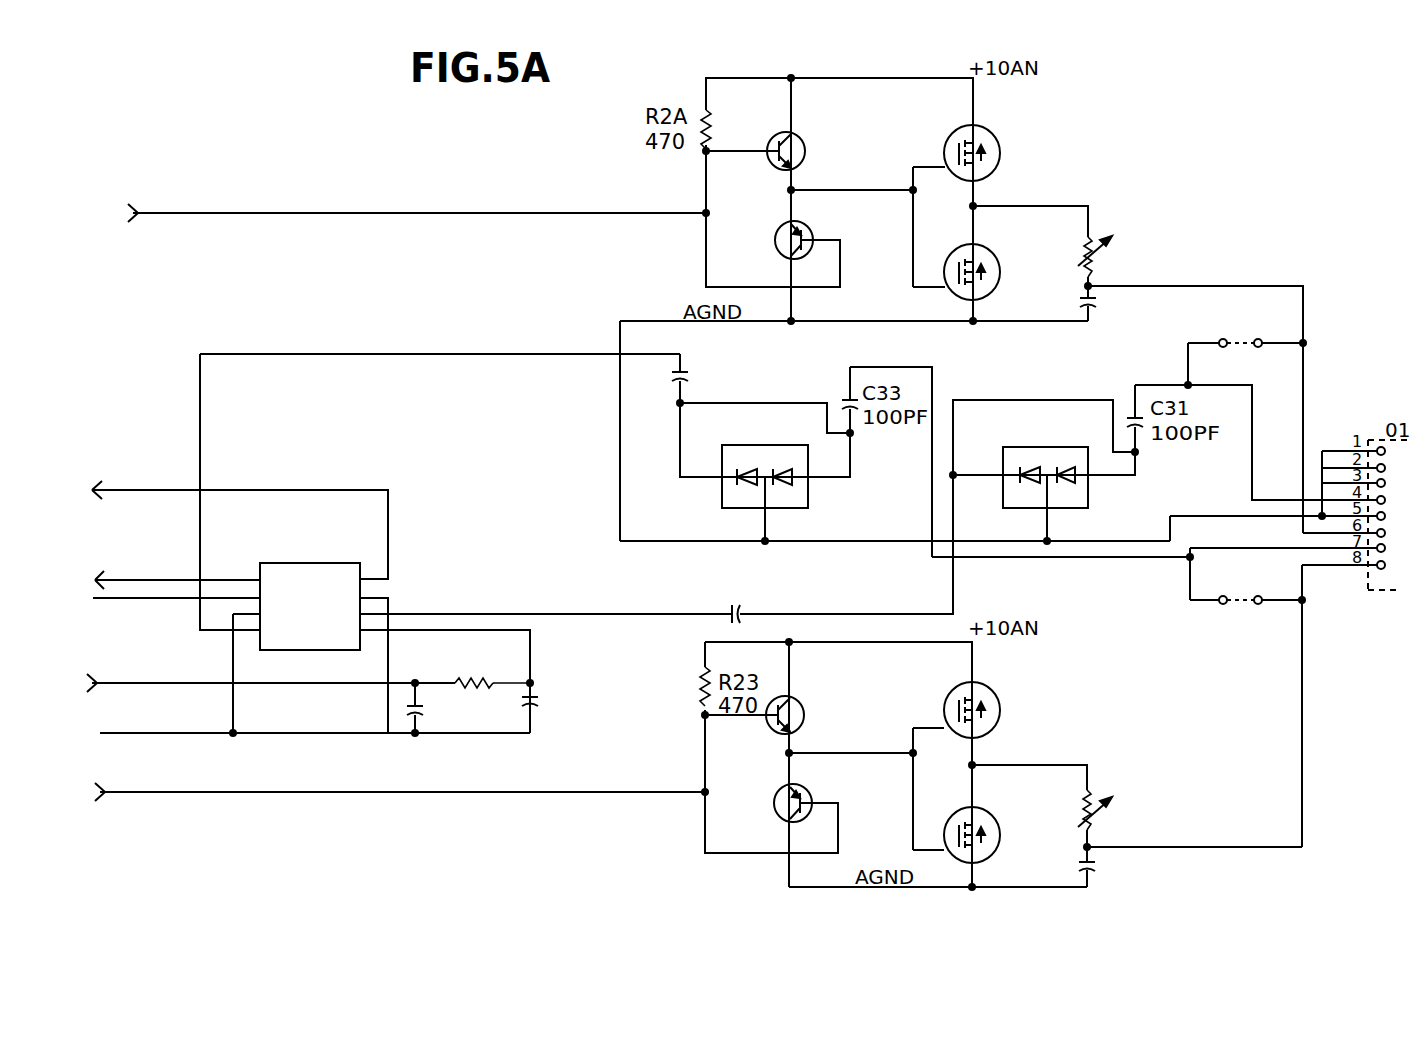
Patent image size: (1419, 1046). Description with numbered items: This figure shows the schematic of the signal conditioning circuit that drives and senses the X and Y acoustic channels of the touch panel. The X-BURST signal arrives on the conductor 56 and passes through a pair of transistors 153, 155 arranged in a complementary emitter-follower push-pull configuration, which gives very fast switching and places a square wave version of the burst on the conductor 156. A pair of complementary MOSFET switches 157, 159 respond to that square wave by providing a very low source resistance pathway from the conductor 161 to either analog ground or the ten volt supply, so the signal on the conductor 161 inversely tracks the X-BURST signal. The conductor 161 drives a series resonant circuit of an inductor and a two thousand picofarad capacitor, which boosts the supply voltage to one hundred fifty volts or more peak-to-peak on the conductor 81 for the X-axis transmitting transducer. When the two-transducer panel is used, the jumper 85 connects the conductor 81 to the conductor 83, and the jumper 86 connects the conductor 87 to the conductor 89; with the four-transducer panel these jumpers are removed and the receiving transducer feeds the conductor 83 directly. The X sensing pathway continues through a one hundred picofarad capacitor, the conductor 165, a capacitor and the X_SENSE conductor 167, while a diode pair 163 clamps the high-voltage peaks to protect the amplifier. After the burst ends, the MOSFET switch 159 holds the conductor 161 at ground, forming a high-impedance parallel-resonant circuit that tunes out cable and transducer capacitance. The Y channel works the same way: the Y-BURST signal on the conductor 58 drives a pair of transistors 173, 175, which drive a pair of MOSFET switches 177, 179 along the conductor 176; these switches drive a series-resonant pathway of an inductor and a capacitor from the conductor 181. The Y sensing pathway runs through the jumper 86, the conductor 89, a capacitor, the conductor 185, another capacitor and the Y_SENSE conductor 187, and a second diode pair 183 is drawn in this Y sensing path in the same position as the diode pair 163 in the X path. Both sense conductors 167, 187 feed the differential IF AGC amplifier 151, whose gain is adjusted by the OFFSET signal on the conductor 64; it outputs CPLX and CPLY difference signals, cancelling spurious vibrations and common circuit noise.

The conductor 56 is at (362, 218).
The conductor 58 is at (333, 795).
The conductor 64 is at (120, 692).
The conductor 81 is at (1200, 286).
The conductor 83 is at (1256, 430).
The jumper 85 is at (1224, 332).
The jumper 86 is at (1228, 607).
The conductor 87 is at (1302, 702).
The conductor 89 is at (1083, 549).
The IF AGC amplifier 151 is at (315, 572).
The transistor 153 is at (797, 130).
The transistor 155 is at (770, 243).
The conductor 156 is at (838, 190).
The MOSFET switch 157 is at (997, 128).
The MOSFET switch 159 is at (1002, 248).
The conductor 161 is at (1065, 206).
The diode pair 163 is at (998, 435).
The conductor 165 is at (868, 613).
The X_SENSE conductor 167 is at (675, 612).
The transistor 173 is at (843, 701).
The transistor 175 is at (770, 806).
The conductor 176 is at (882, 752).
The MOSFET switch 177 is at (1005, 677).
The MOSFET switch 179 is at (1002, 806).
The conductor 181 is at (1062, 765).
The diode D1 MMBD7000 183 is at (730, 408).
The conductor 185 is at (683, 445).
The Y_SENSE conductor 187 is at (352, 360).